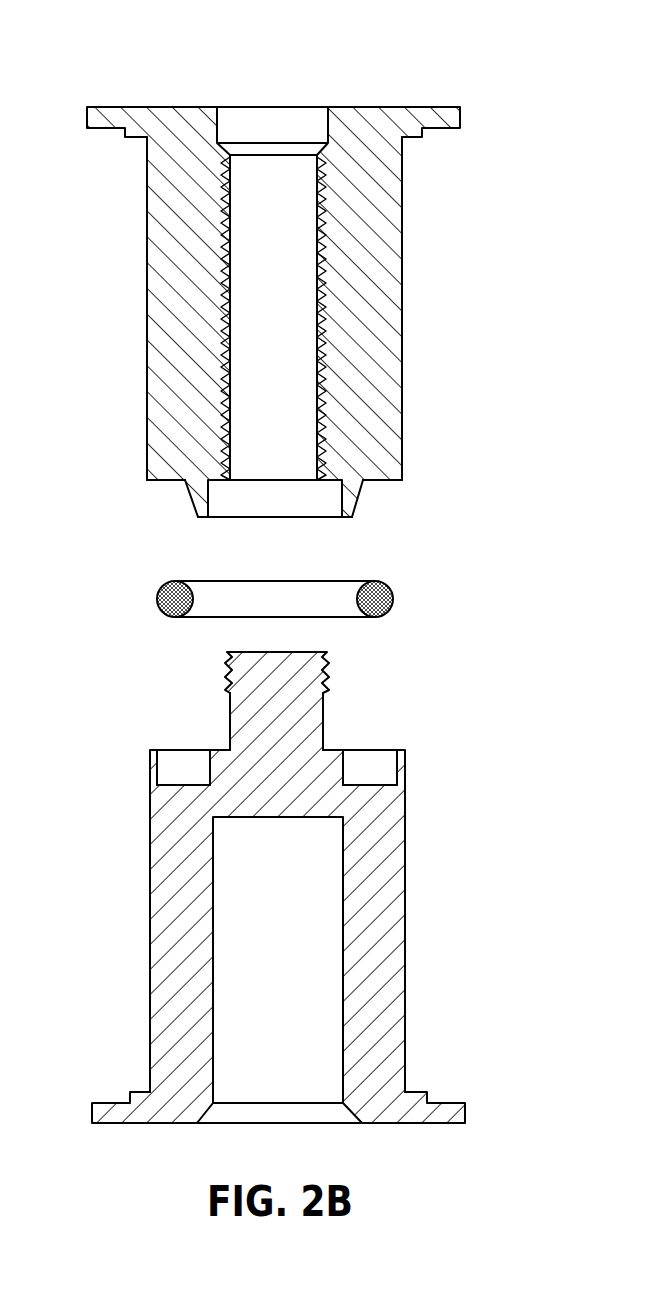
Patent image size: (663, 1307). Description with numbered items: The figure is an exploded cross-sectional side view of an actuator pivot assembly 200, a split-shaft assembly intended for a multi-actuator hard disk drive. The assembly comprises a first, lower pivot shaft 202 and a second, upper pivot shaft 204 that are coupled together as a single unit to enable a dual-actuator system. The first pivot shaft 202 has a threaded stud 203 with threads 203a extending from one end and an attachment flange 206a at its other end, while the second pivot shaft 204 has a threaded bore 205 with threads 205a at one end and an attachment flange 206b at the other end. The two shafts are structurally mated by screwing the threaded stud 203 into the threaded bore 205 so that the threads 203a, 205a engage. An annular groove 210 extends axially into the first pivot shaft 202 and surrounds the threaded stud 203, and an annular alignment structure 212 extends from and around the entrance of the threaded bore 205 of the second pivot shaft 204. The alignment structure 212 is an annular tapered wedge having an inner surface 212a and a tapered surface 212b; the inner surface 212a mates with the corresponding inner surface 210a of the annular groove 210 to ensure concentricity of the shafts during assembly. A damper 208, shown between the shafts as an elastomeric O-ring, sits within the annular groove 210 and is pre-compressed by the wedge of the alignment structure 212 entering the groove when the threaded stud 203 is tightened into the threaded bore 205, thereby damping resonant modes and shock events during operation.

The actuator pivot assembly 200 is at (128, 59).
The first pivot shaft 202 is at (380, 937).
The threaded stud 203 is at (302, 715).
The threads 203a is at (325, 665).
The second pivot shaft 204 is at (383, 303).
The threaded bore 205 is at (265, 320).
The threads 205a is at (232, 404).
The attachment flange 206a is at (467, 1105).
The attachment flange 206b is at (450, 117).
The damper 208 is at (332, 595).
The annular groove 210 is at (182, 770).
The inner surface 210a is at (202, 768).
The alignment structure 212 is at (370, 503).
The inner surface 212a is at (215, 500).
The tapered surface 212b is at (195, 503).